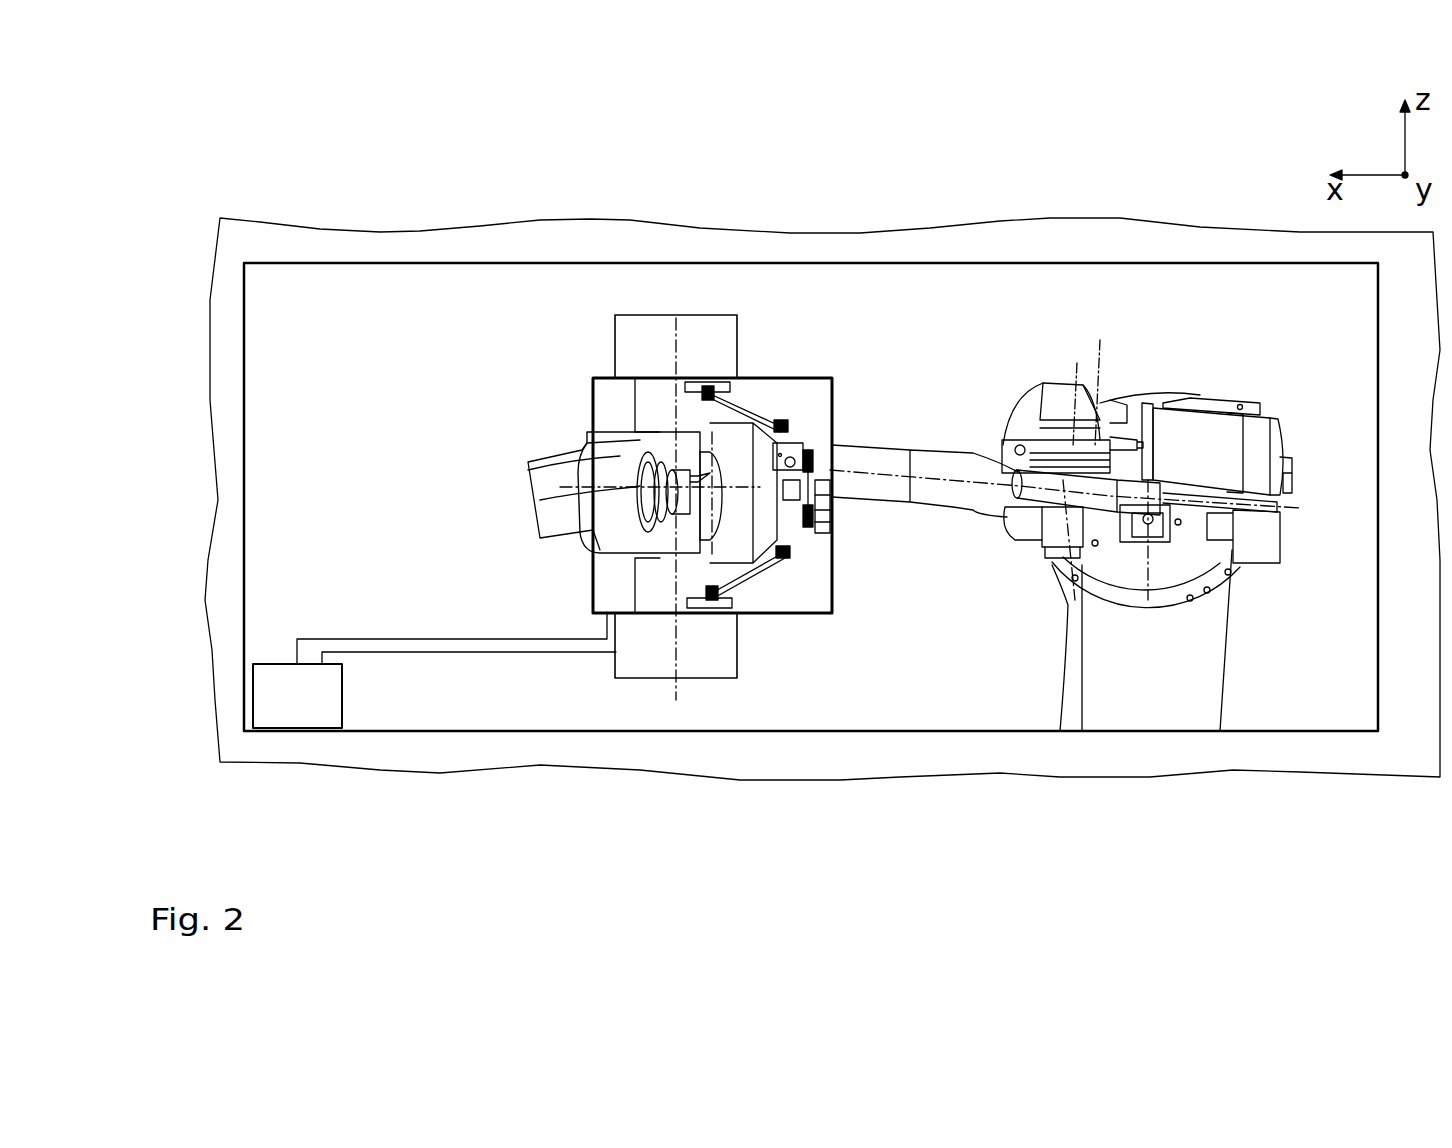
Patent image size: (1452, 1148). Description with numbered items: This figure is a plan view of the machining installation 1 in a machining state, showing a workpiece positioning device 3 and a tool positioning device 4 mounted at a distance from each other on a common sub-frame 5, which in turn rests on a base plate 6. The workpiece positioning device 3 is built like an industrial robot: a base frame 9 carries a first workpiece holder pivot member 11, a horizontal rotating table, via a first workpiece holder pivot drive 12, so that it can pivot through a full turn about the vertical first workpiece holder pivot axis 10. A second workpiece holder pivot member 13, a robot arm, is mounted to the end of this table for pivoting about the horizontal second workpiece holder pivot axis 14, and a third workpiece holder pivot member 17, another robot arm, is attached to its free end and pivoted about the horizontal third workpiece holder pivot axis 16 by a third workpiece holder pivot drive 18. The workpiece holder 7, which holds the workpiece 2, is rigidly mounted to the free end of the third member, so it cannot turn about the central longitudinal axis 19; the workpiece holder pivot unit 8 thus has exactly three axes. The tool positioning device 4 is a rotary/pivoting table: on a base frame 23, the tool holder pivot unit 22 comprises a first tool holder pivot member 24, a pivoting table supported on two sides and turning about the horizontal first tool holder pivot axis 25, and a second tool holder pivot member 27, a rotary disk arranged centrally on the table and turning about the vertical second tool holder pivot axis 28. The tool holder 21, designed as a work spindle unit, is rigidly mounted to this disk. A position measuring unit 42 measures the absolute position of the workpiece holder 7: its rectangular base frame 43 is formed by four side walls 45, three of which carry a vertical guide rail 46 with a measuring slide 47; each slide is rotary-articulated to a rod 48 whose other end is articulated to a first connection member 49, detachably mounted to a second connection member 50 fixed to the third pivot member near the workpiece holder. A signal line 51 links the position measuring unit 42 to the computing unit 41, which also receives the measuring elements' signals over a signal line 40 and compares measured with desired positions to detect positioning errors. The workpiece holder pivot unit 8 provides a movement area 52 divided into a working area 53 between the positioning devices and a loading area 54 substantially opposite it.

The machining installation 1 is at (920, 307).
The workpiece 2 is at (707, 433).
The workpiece positioning device 3 is at (1180, 380).
The tool positioning device 4 is at (643, 307).
The sub-frame 5 is at (1198, 280).
The base plate 6 is at (1225, 243).
The workpiece holder 7 is at (760, 420).
The workpiece holder pivot unit 8 is at (1000, 445).
The base frame 9 is at (1207, 573).
The first workpiece holder pivot axis 10 is at (1105, 560).
The first workpiece holder pivot member 11 is at (1232, 560).
The first workpiece holder pivot drive 12 is at (1143, 547).
The second workpiece holder pivot member 13 is at (1067, 403).
The second workpiece holder pivot axis 14 is at (1103, 330).
The third workpiece holder pivot axis 16 is at (1062, 600).
The third workpiece holder pivot member 17 is at (983, 450).
The third workpiece holder pivot drive 18 is at (1050, 565).
The central longitudinal axis 19 is at (933, 447).
The tool holder 21 is at (528, 488).
The tool holder pivot unit 22 is at (630, 582).
The base frame 23 is at (628, 672).
The first tool holder pivot member 24 is at (643, 593).
The first tool holder pivot axis 25 is at (673, 667).
The second tool holder pivot member 27 is at (617, 543).
The second tool holder pivot axis 28 is at (600, 513).
The signal line 40 is at (562, 653).
The computing unit 41 is at (263, 677).
The position measuring unit 42 is at (803, 648).
The base frame 43 is at (796, 617).
The side wall 45 is at (815, 450).
The guide rail 46 is at (705, 382).
The measuring slide 47 is at (757, 400).
The rod 48 is at (768, 400).
The first connection member 49 is at (800, 440).
The second connection member 50 is at (798, 545).
The signal line 51 is at (293, 645).
The movement area 52 is at (1185, 354).
The working area 53 is at (900, 588).
The loading area 54 is at (1389, 519).